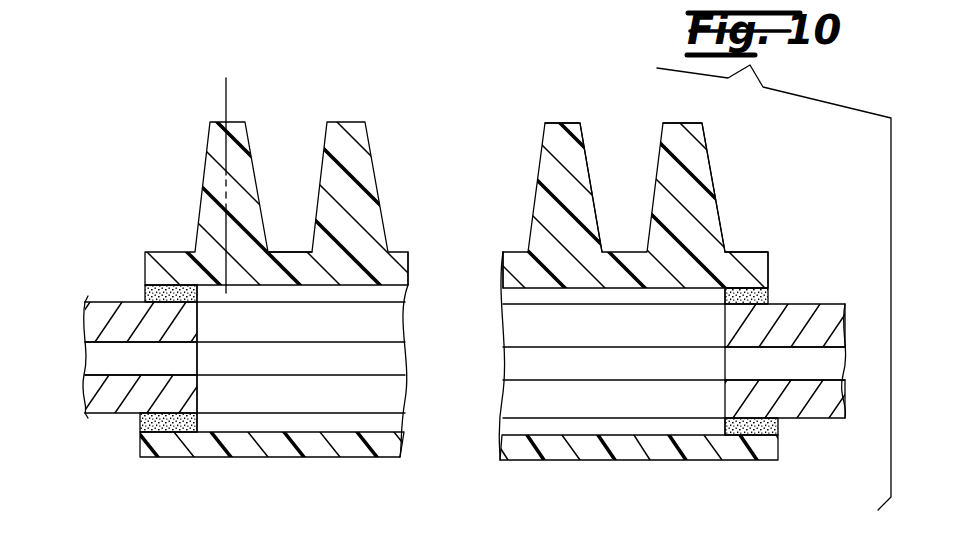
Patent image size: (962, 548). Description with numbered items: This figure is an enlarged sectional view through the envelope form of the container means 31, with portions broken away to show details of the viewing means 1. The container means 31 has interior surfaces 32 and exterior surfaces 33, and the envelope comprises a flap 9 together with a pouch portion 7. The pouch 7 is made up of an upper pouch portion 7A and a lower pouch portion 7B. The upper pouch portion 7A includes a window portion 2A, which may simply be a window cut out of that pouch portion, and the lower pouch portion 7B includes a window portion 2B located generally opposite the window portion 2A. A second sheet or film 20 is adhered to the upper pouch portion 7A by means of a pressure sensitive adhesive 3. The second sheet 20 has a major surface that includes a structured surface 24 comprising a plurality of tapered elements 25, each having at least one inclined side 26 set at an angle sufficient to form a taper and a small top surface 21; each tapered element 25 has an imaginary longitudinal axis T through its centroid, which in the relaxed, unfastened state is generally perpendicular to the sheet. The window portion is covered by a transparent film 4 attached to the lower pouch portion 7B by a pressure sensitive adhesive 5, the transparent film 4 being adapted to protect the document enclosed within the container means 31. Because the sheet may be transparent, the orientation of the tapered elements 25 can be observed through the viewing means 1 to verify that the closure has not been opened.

The viewing means 1 is at (445, 457).
The window portion 2A is at (197, 323).
The window portion 2B is at (200, 398).
The pressure sensitive adhesive 3 is at (143, 293).
The transparent film 4 is at (270, 445).
The pressure sensitive adhesive 5 is at (158, 425).
The pouch portion 7 is at (837, 423).
The upper pouch portion 7A is at (88, 318).
The lower pouch portion 7B is at (818, 410).
The flap 9 is at (387, 360).
The second sheet 20 is at (742, 253).
The top surface 21 is at (335, 122).
The structured surface 24 is at (502, 120).
The tapered element 25 is at (663, 173).
The inclined side 26 is at (322, 160).
The container means 31 is at (847, 300).
The interior surface 32 is at (112, 372).
The exterior surface 33 is at (108, 298).
The longitudinal axis T is at (224, 90).